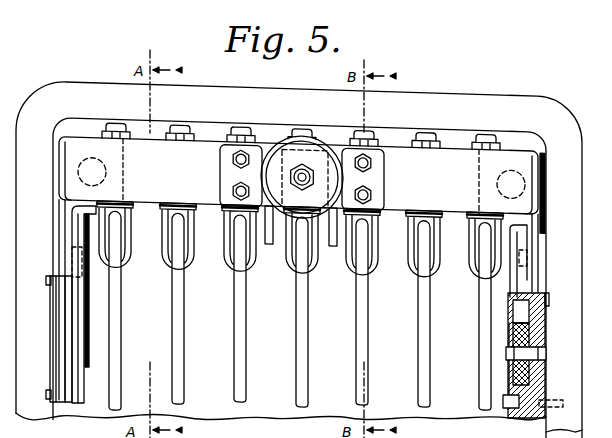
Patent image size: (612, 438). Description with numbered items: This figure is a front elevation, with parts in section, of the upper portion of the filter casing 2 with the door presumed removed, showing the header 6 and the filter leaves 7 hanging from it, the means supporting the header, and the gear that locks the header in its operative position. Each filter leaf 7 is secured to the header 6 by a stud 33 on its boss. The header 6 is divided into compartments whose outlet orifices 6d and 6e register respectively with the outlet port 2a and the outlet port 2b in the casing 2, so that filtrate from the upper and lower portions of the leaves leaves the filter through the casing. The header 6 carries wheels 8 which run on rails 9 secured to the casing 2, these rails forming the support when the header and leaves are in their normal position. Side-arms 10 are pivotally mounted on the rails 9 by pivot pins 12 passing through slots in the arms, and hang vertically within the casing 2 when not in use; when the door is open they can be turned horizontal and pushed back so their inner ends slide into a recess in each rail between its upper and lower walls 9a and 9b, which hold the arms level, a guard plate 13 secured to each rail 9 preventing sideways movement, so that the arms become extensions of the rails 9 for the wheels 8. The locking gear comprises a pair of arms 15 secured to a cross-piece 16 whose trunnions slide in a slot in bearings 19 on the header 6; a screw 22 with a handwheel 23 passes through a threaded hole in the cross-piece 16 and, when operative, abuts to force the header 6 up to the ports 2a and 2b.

The casing 2 is at (299, 259).
The outlet port 2a is at (538, 152).
The outlet port 2b is at (71, 135).
The header 6 is at (298, 176).
The outlet orifice 6d is at (510, 182).
The outlet orifice 6e is at (92, 172).
The filter leaves 7 is at (175, 343).
The wheels 8 is at (80, 229).
The rails 9 is at (547, 295).
The upper wall of recess 9a is at (538, 338).
The lower wall of recess 9b is at (541, 400).
The side-arms 10 is at (75, 314).
The pivot pin 12 is at (527, 357).
The guard plate 13 is at (516, 314).
The arms 15 is at (270, 243).
The cross-piece 16 is at (318, 147).
The bearings 19 is at (224, 171).
The screw 22 is at (296, 178).
The handwheel 23 is at (270, 146).
The stud 33 is at (240, 134).